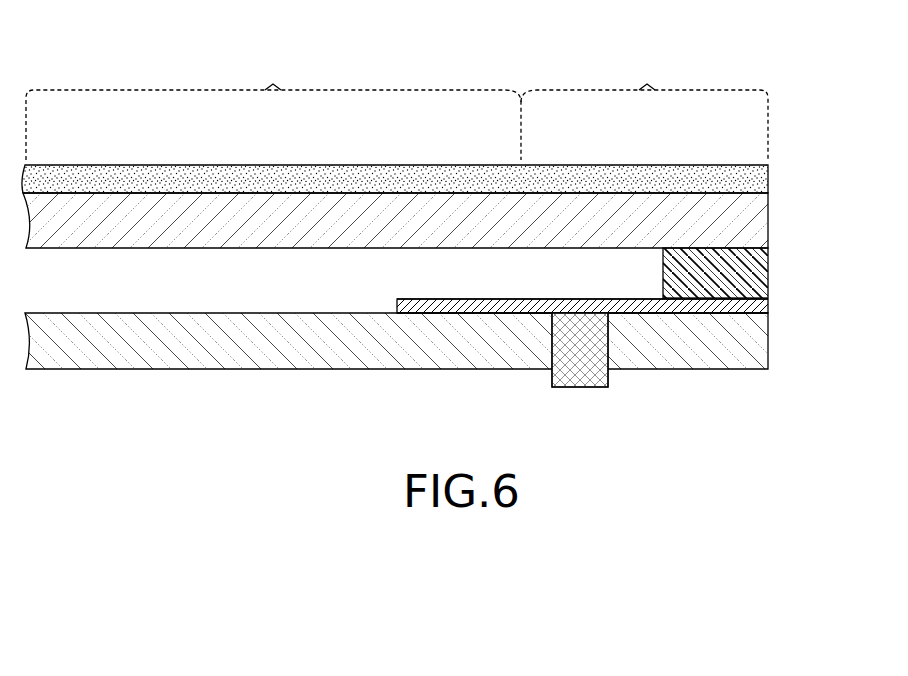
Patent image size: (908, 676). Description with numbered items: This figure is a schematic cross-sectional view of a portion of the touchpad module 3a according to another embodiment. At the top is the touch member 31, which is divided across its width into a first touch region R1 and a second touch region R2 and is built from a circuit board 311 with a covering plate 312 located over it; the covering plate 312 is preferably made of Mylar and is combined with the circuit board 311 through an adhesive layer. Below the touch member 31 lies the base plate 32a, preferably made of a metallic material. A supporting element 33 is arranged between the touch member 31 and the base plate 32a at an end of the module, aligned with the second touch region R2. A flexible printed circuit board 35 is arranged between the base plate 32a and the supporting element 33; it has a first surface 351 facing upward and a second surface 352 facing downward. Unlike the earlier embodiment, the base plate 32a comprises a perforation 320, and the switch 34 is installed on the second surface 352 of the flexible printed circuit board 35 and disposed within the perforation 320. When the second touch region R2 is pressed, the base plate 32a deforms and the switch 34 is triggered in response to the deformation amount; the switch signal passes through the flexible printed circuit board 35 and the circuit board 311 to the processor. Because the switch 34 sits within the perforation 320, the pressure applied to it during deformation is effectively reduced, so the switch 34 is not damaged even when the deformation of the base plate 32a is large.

The touchpad module 3a is at (785, 136).
The touch member 31 is at (458, 206).
The circuit board 311 is at (745, 218).
The covering plate 312 is at (745, 176).
The supporting element 33 is at (755, 286).
The flexible printed circuit board 35 is at (414, 302).
The first surface 351 is at (477, 296).
The second surface 352 is at (444, 317).
The base plate 32a is at (757, 355).
The perforation 320 is at (582, 340).
The switch 34 is at (587, 334).
The first touch region R1 is at (274, 66).
The second touch region R2 is at (646, 68).